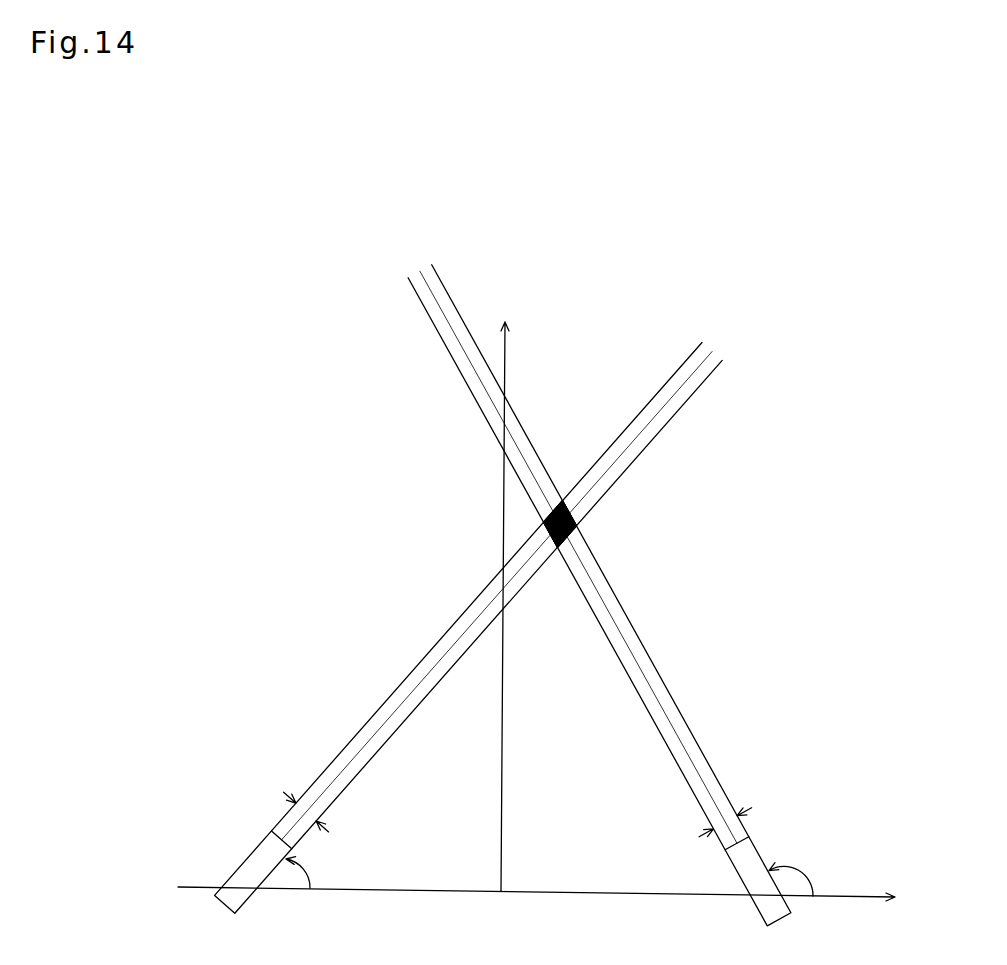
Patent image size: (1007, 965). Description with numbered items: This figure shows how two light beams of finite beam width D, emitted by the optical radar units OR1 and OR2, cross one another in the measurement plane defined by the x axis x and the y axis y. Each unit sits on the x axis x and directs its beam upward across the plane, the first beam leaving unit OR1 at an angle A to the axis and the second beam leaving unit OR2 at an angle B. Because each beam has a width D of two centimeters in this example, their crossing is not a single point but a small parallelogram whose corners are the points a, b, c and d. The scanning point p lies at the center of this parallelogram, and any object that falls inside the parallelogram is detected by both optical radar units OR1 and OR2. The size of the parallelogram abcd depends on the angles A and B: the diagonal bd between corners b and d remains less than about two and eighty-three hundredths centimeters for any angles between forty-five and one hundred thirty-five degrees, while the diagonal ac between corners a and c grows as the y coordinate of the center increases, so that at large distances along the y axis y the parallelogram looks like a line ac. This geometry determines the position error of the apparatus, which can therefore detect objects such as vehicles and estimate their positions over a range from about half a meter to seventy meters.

The optical radar unit OR1 is at (251, 894).
The optical radar unit OR2 is at (762, 898).
The beam angle A is at (308, 869).
The beam angle B is at (796, 875).
The beam width D is at (521, 802).
The scanning point p is at (570, 515).
The parallelogram vertex a is at (560, 554).
The parallelogram vertex b is at (580, 524).
The parallelogram vertex c is at (560, 495).
The parallelogram vertex d is at (542, 524).
The x axis x is at (536, 911).
The y axis y is at (517, 606).